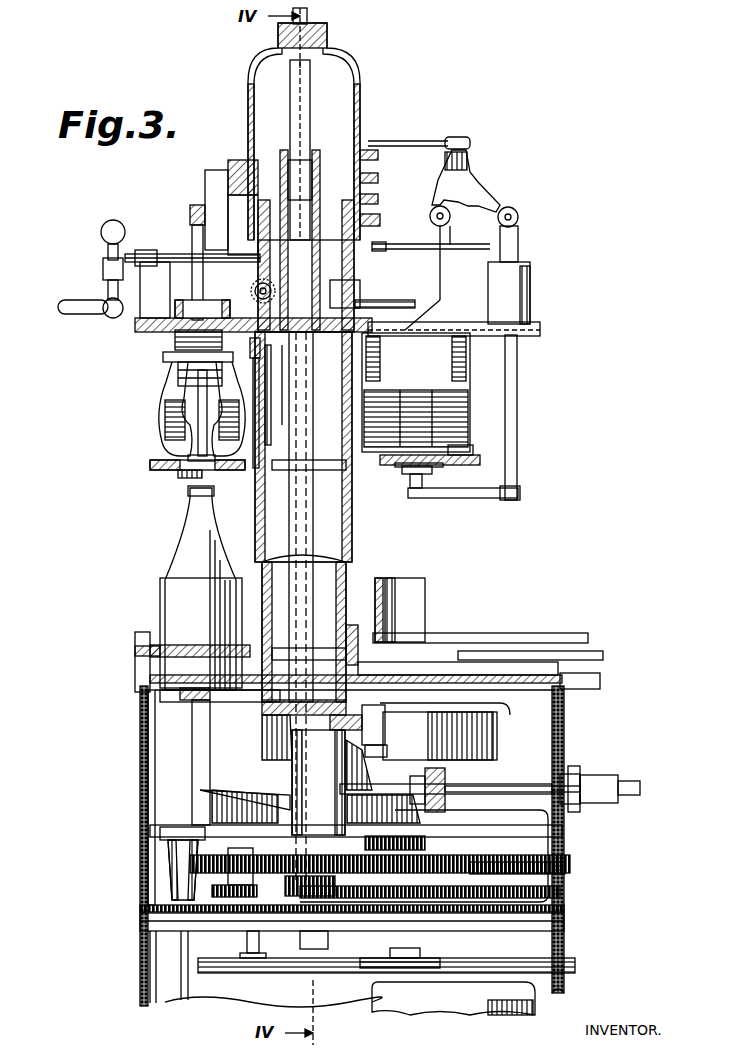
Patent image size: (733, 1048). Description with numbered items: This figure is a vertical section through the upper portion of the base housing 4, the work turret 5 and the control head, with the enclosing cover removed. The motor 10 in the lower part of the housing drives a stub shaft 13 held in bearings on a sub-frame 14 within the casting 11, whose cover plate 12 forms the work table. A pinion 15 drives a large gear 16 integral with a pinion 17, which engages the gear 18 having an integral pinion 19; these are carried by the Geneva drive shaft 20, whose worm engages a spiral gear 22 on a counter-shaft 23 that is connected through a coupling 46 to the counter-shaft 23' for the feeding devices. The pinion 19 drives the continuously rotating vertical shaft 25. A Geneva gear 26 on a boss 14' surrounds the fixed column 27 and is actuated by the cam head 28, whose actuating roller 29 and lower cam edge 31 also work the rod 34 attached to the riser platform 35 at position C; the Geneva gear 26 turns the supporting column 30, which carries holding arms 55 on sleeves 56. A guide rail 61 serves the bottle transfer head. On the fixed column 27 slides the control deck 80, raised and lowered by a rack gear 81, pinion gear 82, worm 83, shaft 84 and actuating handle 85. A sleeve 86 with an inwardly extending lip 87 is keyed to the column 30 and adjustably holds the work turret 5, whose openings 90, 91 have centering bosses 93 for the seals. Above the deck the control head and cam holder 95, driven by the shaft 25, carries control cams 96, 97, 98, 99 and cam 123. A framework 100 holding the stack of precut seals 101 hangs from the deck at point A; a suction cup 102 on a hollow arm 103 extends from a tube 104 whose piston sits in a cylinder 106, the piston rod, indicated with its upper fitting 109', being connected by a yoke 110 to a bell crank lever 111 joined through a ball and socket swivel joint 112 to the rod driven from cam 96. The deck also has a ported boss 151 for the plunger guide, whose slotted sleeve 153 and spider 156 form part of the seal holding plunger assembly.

The shaft 25 is at (300, 82).
The control head and cam holder 95 is at (358, 108).
The control cam 96 is at (370, 150).
The control cam 97 is at (374, 176).
The control cam 98 is at (374, 197).
The control cam 99 is at (376, 218).
The ball and socket swivel joint 112 is at (460, 137).
The bell crank lever 111 is at (476, 196).
The yoke 110 is at (516, 212).
The bracket 109' is at (535, 233).
The cylinder 106 is at (532, 290).
The cam 123 is at (378, 252).
The slotted sleeve 153 is at (190, 213).
The worm 83 is at (225, 254).
The shaft 84 is at (108, 262).
The actuating handle 85 is at (86, 292).
The pinion gear 82 is at (250, 291).
The control deck 80 is at (138, 324).
The ported boss 151 is at (178, 320).
The spider 156 is at (188, 352).
The inwardly extending lip 87 is at (252, 345).
The rack gear 81 is at (282, 395).
The sleeve 86 is at (278, 426).
The fixed column 27 is at (316, 430).
The framework 100 is at (455, 390).
The precut seals 101 is at (392, 392).
The tube 104 is at (518, 420).
The centering bosses 93 is at (152, 458).
The work turret 5 is at (126, 462).
The opening 91 is at (180, 478).
The opening 90 is at (434, 474).
The suction cup 102 is at (408, 480).
The hollow arm 103 is at (470, 498).
The supporting column 30 is at (350, 565).
The point A is at (420, 563).
The position C is at (160, 555).
The holding arm 55 is at (422, 606).
The sleeve 56 is at (358, 658).
The cover plate 12 is at (520, 672).
The guide rail 61 is at (590, 650).
The riser platform 35 is at (150, 662).
The base housing 4 is at (136, 752).
The casting 11 is at (140, 778).
The rod 34 is at (195, 778).
The actuating roller 29 is at (380, 718).
The cam head 28 is at (496, 735).
The Geneva gear 26 is at (340, 745).
The cam edge 31 is at (387, 750).
The Geneva drive shaft 20 is at (430, 782).
The spiral gear 22 is at (455, 788).
The counter-shaft 23 is at (512, 782).
The coupling 46 is at (596, 775).
The counter-shaft 23' is at (635, 771).
The boss 14' is at (356, 797).
The sub-frame 14 is at (365, 863).
The pinion 15 is at (228, 886).
The pinion 17 is at (292, 874).
The large gear 16 is at (368, 900).
The gear 18 is at (512, 864).
The pinion 19 is at (488, 846).
The stub shaft 13 is at (247, 944).
The motor 10 is at (406, 1000).